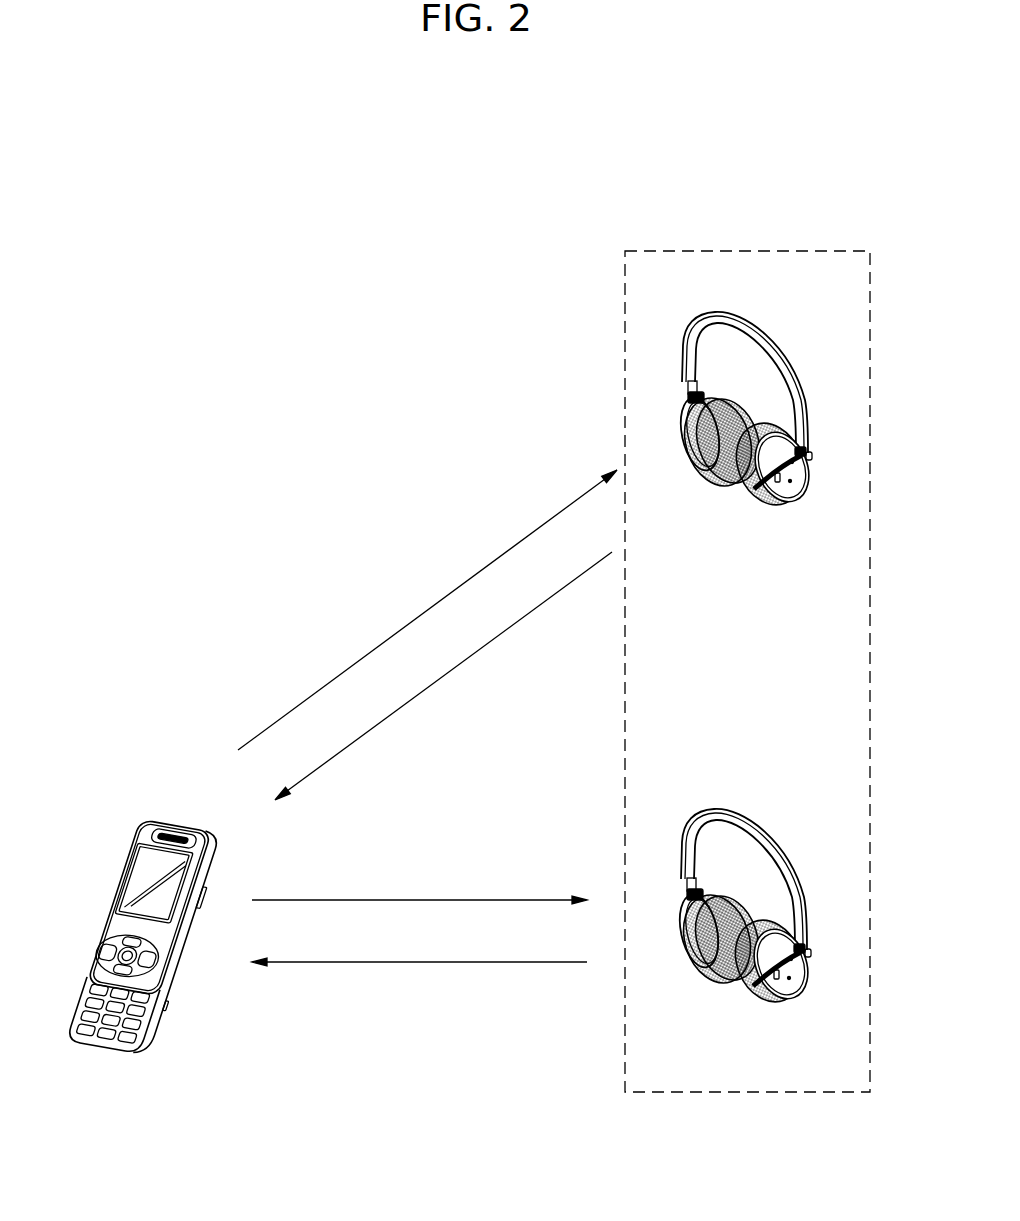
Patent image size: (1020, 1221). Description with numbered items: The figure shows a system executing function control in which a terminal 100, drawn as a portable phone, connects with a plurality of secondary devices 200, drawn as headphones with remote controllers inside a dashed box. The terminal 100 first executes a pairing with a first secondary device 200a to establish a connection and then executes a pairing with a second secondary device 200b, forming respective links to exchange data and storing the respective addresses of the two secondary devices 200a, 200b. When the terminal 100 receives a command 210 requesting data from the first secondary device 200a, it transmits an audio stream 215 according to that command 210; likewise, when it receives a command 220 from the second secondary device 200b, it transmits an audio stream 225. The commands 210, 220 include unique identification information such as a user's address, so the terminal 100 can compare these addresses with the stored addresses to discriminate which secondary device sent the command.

The terminal 100 is at (138, 820).
The secondary devices 200 is at (783, 251).
The first secondary device 200a is at (757, 332).
The second secondary device 200b is at (757, 832).
The command 210 is at (492, 640).
The audio stream 215 is at (450, 593).
The command 220 is at (520, 962).
The audio stream 225 is at (520, 900).